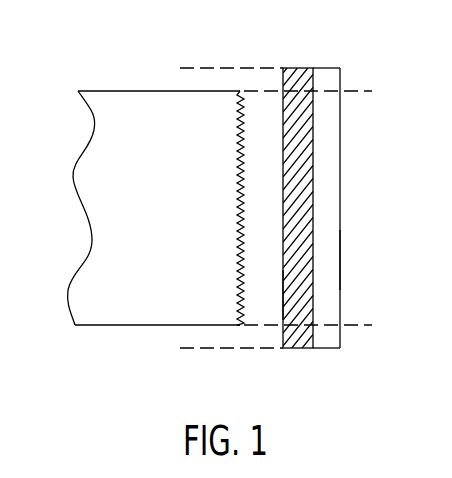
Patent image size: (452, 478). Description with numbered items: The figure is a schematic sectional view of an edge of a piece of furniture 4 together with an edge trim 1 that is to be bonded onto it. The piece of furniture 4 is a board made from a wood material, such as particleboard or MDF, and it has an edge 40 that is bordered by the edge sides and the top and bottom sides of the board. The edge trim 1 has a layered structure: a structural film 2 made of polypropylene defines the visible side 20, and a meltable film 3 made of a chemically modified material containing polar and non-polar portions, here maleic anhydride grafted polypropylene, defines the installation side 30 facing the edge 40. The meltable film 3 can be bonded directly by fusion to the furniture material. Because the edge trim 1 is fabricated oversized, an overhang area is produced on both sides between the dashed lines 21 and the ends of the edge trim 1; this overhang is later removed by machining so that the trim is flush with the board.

The edge trim 1 is at (368, 43).
The structural film 2 is at (330, 132).
The meltable film 3 is at (296, 78).
The piece of furniture 4 is at (132, 75).
The visible side 20 is at (340, 258).
The dashed lines 21 is at (340, 91).
The installation side 30 is at (283, 296).
The edge 40 is at (249, 112).